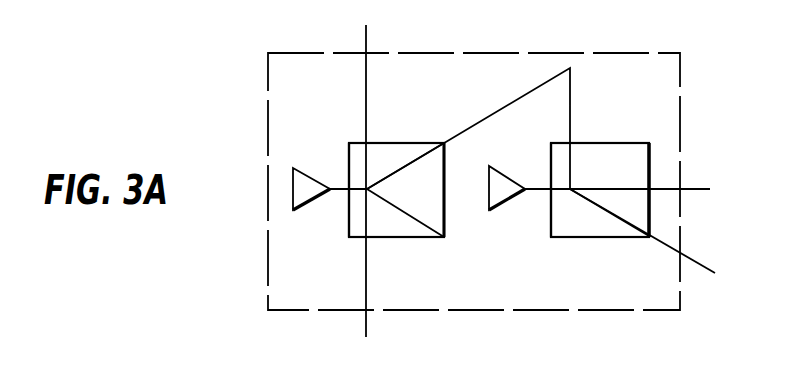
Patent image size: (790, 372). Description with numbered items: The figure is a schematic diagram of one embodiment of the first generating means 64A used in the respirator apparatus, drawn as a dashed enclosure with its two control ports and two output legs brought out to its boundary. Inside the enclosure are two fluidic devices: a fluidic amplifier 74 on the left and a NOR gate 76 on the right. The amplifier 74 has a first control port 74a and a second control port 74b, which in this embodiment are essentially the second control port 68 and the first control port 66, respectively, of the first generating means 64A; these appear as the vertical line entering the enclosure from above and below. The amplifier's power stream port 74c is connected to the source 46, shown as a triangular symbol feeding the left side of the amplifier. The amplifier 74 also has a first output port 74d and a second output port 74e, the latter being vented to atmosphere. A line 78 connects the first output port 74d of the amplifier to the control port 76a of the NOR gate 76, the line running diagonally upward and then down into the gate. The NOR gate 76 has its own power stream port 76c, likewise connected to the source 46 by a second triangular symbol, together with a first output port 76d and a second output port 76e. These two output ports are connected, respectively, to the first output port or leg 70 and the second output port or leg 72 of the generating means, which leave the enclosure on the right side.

The first generating means 64A is at (268, 281).
The first control port 66 is at (367, 52).
The second control port 68 is at (368, 312).
The source 46 is at (300, 212).
The fluidic amplifier 74 is at (349, 143).
The first control port 74a is at (370, 224).
The second control port 74b is at (368, 150).
The power stream port 74c is at (350, 180).
The first output port 74d is at (422, 157).
The second output port 74e is at (420, 223).
The line 78 is at (500, 110).
The NOR gate 76 is at (551, 143).
The control port 76a is at (575, 150).
The power stream port 76c is at (560, 187).
The first output port 76d is at (618, 217).
The second output port 76e is at (626, 188).
The first output port or leg 70 is at (689, 259).
The second output port or leg 72 is at (688, 188).